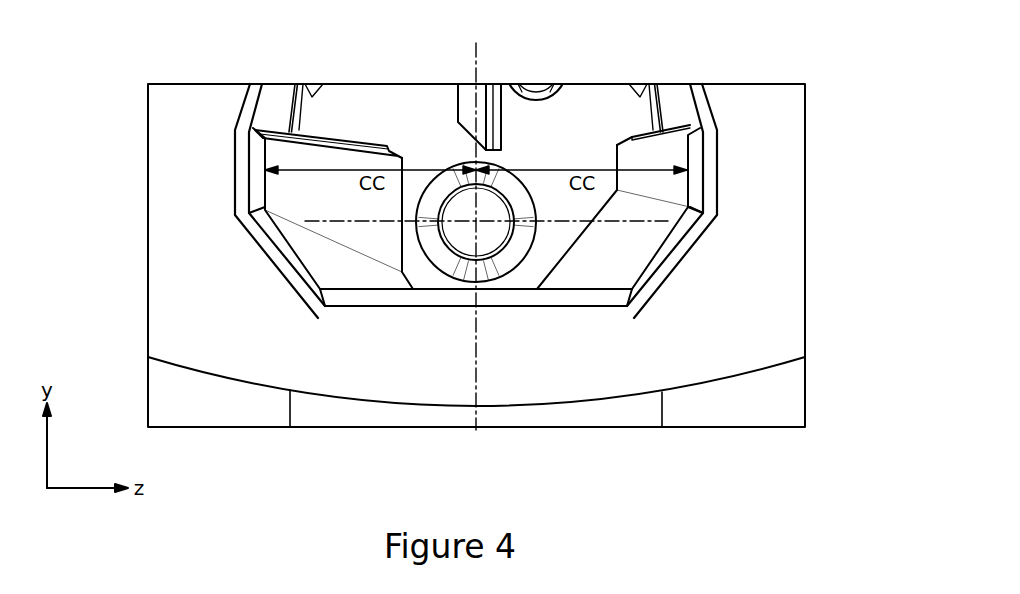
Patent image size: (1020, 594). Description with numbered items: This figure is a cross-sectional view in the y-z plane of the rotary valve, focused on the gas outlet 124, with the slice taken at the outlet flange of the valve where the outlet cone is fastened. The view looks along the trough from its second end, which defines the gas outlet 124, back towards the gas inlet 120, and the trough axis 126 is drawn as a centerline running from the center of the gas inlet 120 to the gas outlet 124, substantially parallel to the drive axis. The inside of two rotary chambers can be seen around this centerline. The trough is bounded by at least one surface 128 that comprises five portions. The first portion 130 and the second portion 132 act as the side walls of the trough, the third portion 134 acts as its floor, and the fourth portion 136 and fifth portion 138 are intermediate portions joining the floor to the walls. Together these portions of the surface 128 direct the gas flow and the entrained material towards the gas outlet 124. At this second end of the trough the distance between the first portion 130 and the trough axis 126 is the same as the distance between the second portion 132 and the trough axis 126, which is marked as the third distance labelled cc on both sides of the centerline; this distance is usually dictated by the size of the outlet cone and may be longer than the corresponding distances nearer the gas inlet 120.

The gas inlet 120 is at (540, 253).
The gas outlet 124 is at (704, 113).
The trough axis 126 is at (463, 95).
The surface 128 is at (275, 148).
The first portion 130 is at (244, 152).
The second portion 132 is at (689, 150).
The third portion 134 is at (548, 295).
The fourth portion 136 is at (272, 248).
The fifth portion 138 is at (688, 234).